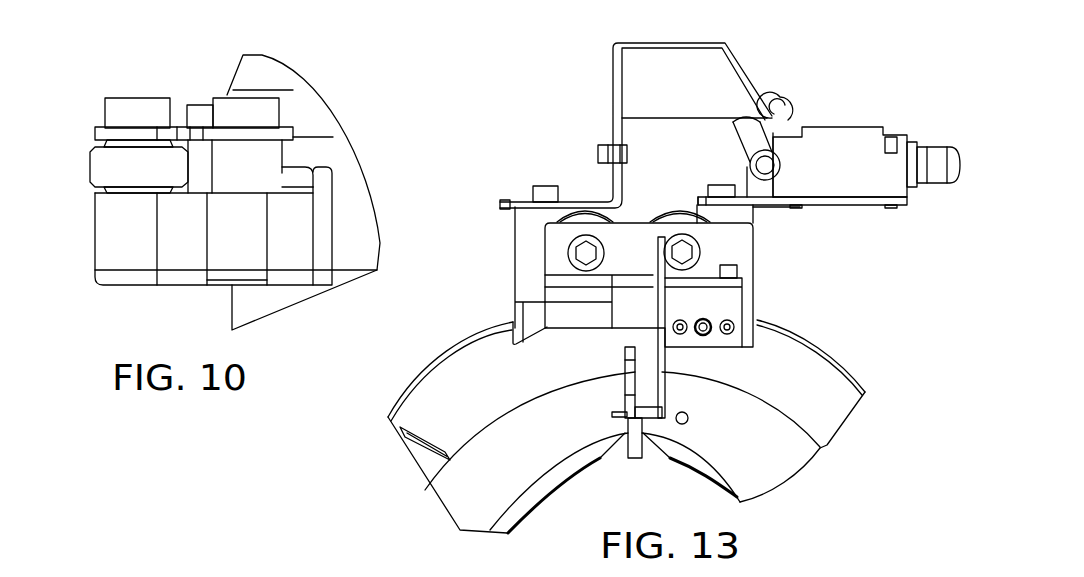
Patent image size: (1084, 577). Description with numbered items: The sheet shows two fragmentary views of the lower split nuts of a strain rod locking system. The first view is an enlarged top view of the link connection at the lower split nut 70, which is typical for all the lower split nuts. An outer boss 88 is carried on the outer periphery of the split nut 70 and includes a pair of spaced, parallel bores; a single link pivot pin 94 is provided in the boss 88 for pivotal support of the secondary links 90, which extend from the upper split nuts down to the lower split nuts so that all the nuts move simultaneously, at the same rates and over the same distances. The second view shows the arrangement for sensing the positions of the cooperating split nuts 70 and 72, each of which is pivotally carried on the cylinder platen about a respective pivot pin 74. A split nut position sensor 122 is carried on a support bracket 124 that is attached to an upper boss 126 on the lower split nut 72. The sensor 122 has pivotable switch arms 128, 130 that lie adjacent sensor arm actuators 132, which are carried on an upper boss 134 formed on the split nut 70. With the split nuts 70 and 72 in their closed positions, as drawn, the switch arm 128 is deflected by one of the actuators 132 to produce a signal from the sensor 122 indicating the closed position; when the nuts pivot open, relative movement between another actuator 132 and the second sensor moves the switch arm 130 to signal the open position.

In FIG. 10, the lower split nut 70 is at (327, 157).
In FIG. 13, the lower split nut 70 is at (490, 355).
In FIG. 13, the lower split nut 72 is at (782, 360).
In FIG. 13, the pivot pin 74 is at (578, 258).
In FIG. 10, the outer boss 88 is at (183, 263).
In FIG. 10, the secondary link 90 is at (148, 178).
In FIG. 10, the link pivot pin 94 is at (194, 97).
In FIG. 13, the split nut position sensor 122 is at (842, 137).
In FIG. 13, the support bracket 124 is at (858, 203).
In FIG. 13, the upper boss 126 is at (743, 213).
In FIG. 13, the switch arm 128 is at (728, 157).
In FIG. 13, the switch arm 130 is at (780, 106).
In FIG. 13, the sensor arm actuator 132 is at (695, 44).
In FIG. 13, the upper boss 134 is at (517, 228).